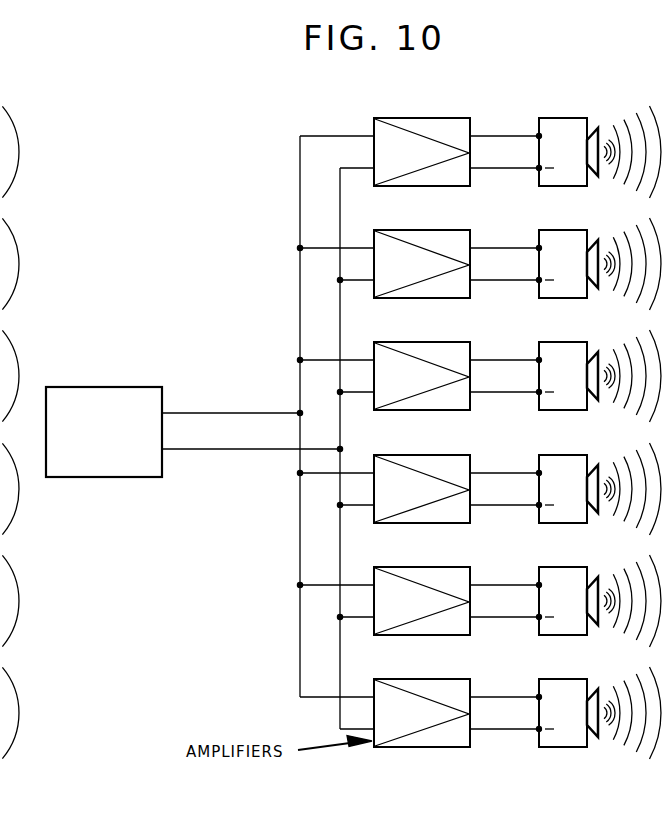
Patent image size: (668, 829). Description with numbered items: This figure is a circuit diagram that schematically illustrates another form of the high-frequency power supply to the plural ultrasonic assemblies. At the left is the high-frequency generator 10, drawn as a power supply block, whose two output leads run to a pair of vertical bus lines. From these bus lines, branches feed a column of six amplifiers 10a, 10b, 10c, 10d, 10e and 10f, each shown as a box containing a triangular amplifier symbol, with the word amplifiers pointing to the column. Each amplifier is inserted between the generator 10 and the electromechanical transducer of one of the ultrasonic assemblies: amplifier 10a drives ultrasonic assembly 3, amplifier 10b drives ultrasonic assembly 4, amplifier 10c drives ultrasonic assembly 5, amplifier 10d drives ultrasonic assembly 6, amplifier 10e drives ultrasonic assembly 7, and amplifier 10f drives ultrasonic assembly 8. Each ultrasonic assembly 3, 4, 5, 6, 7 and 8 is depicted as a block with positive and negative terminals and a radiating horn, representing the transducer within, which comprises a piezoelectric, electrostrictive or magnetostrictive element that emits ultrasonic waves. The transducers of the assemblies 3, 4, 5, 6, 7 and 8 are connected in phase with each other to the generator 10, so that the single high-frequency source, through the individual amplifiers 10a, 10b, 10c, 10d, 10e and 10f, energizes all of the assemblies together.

The high-frequency generator 10 is at (105, 480).
The amplifier 10a is at (429, 116).
The amplifier 10b is at (428, 229).
The amplifier 10c is at (429, 342).
The amplifier 10d is at (429, 455).
The amplifier 10e is at (429, 567).
The amplifier 10f is at (431, 679).
The ultrasonic assembly 3 is at (565, 117).
The ultrasonic assembly 4 is at (563, 230).
The ultrasonic assembly 5 is at (563, 342).
The ultrasonic assembly 6 is at (564, 455).
The ultrasonic assembly 7 is at (561, 567).
The ultrasonic assembly 8 is at (561, 679).